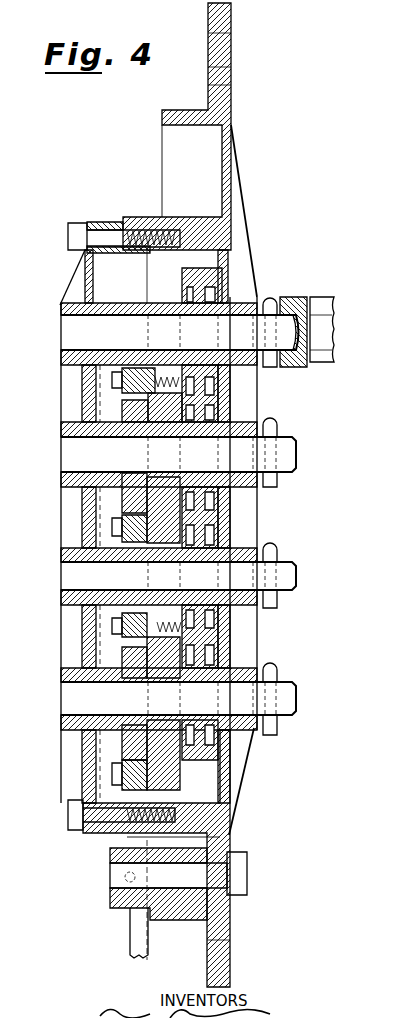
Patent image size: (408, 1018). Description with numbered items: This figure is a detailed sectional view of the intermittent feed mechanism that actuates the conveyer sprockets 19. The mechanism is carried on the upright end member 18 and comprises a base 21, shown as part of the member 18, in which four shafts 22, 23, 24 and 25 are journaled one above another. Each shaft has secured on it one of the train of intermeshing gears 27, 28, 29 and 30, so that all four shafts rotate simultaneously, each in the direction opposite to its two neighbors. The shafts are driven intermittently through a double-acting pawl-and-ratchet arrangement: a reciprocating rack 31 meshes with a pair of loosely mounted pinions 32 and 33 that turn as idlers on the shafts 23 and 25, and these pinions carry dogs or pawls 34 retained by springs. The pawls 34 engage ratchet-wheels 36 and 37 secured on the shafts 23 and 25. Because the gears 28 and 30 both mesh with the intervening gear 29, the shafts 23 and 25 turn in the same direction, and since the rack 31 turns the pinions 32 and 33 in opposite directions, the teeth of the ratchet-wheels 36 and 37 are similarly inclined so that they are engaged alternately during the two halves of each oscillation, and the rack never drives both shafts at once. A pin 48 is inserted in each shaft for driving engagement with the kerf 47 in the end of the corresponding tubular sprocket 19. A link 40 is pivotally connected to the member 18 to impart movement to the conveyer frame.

The end member 18 is at (234, 146).
The sprocket 19 is at (320, 307).
The base 21 is at (209, 237).
The shaft 22 is at (62, 330).
The shaft 23 is at (62, 452).
The shaft 24 is at (62, 575).
The shaft 25 is at (62, 708).
The gear 27 is at (183, 292).
The gear 28 is at (205, 415).
The gear 29 is at (205, 528).
The gear 30 is at (232, 760).
The rack 31 is at (144, 593).
The pinion 32 is at (152, 468).
The pinion 33 is at (165, 672).
The pawl 34 is at (118, 392).
The ratchet-wheel 36 is at (128, 490).
The ratchet-wheel 37 is at (122, 736).
The link 40 is at (134, 938).
The kerf 47 is at (292, 300).
The pin 48 is at (270, 302).